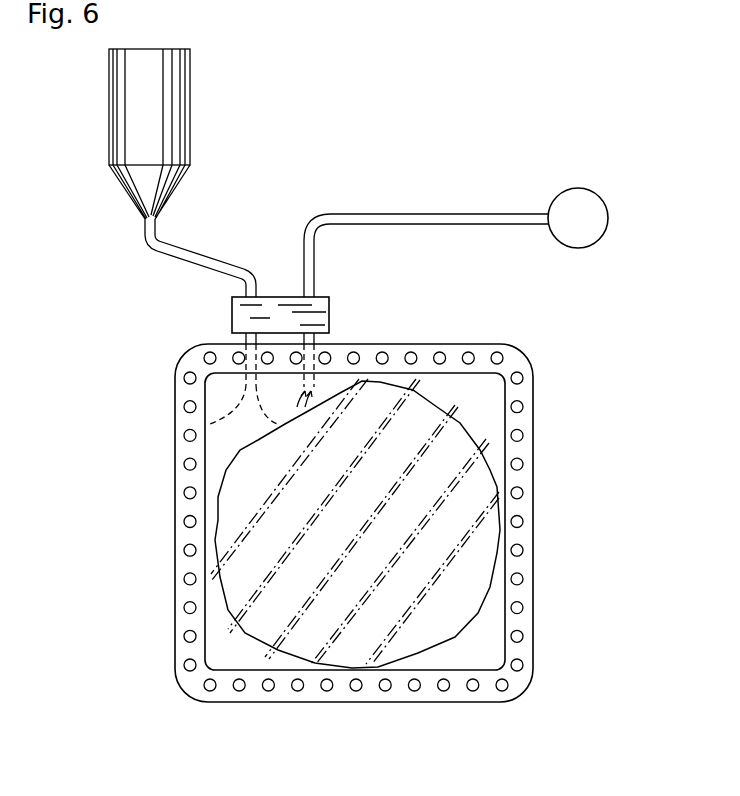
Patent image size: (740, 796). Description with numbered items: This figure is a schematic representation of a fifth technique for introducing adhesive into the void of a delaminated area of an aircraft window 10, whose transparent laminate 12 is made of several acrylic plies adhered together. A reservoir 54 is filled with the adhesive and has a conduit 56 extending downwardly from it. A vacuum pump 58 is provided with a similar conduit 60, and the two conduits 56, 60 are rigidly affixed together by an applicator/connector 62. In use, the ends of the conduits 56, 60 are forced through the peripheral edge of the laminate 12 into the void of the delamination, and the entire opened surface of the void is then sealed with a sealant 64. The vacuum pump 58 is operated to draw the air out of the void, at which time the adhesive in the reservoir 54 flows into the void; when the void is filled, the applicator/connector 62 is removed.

The aircraft window 10 is at (540, 396).
The transparent laminate 12 is at (467, 478).
The reservoir 54 is at (170, 115).
The conduit 56 is at (157, 240).
The vacuum pump 58 is at (568, 242).
The conduit 60 is at (320, 227).
The applicator/connector 62 is at (324, 306).
The sealant 64 is at (245, 408).